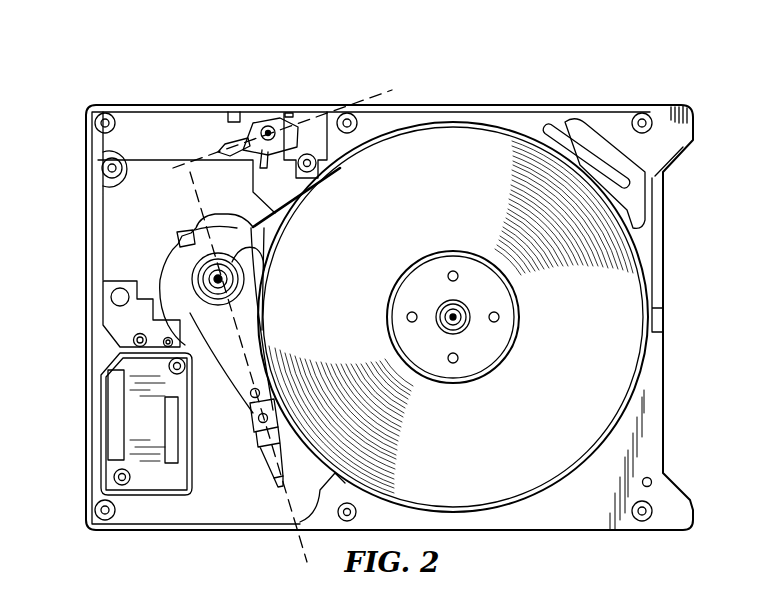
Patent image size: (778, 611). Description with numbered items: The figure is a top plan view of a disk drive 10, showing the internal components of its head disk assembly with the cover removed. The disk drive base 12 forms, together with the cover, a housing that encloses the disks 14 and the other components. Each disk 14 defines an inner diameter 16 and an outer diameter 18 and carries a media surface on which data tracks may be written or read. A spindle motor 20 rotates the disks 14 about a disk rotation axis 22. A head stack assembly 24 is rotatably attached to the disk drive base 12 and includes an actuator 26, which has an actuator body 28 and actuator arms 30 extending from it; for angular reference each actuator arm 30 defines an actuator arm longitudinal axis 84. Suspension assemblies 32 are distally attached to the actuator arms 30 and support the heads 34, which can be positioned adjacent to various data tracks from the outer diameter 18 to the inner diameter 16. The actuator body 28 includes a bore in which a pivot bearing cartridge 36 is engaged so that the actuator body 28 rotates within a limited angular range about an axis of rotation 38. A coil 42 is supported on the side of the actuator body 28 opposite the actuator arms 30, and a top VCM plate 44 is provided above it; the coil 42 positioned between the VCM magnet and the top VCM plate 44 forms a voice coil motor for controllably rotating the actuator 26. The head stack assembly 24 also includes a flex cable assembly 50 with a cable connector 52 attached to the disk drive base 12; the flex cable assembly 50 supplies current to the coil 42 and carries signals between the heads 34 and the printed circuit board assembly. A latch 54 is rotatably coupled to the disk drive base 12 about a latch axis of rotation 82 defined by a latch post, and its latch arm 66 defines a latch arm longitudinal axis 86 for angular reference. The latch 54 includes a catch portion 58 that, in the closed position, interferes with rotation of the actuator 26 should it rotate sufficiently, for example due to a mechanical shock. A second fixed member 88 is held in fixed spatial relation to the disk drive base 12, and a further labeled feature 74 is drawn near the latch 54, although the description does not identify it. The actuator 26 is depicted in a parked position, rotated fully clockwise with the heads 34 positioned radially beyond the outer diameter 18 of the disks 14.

The disk drive 10 is at (490, 86).
The disk drive base 12 is at (577, 105).
The disks 14 is at (559, 409).
The inner diameter 16 is at (388, 302).
The outer diameter 18 is at (450, 122).
The spindle motor 20 is at (452, 252).
The disk rotation axis 22 is at (449, 311).
The head stack assembly 24 is at (172, 268).
The actuator 26 is at (190, 296).
The actuator body 28 is at (198, 310).
The actuator arms 30 is at (252, 360).
The suspension assemblies 32 is at (267, 453).
The heads 34 is at (277, 483).
The pivot bearing cartridge 36 is at (251, 248).
The axis of rotation 38 is at (230, 280).
The coil 42 is at (190, 237).
The top VCM plate 44 is at (118, 222).
The flex cable assembly 50 is at (147, 404).
The cable connector 52 is at (147, 440).
The latch 54 is at (257, 124).
The catch portion 58 is at (220, 150).
The latch arm 66 is at (240, 147).
The ramp bracket 74 is at (308, 108).
The latch axis of rotation 82 is at (268, 124).
The actuator arm longitudinal axis 84 is at (295, 540).
The latch arm longitudinal axis 86 is at (367, 102).
The second fixed member 88 is at (232, 112).